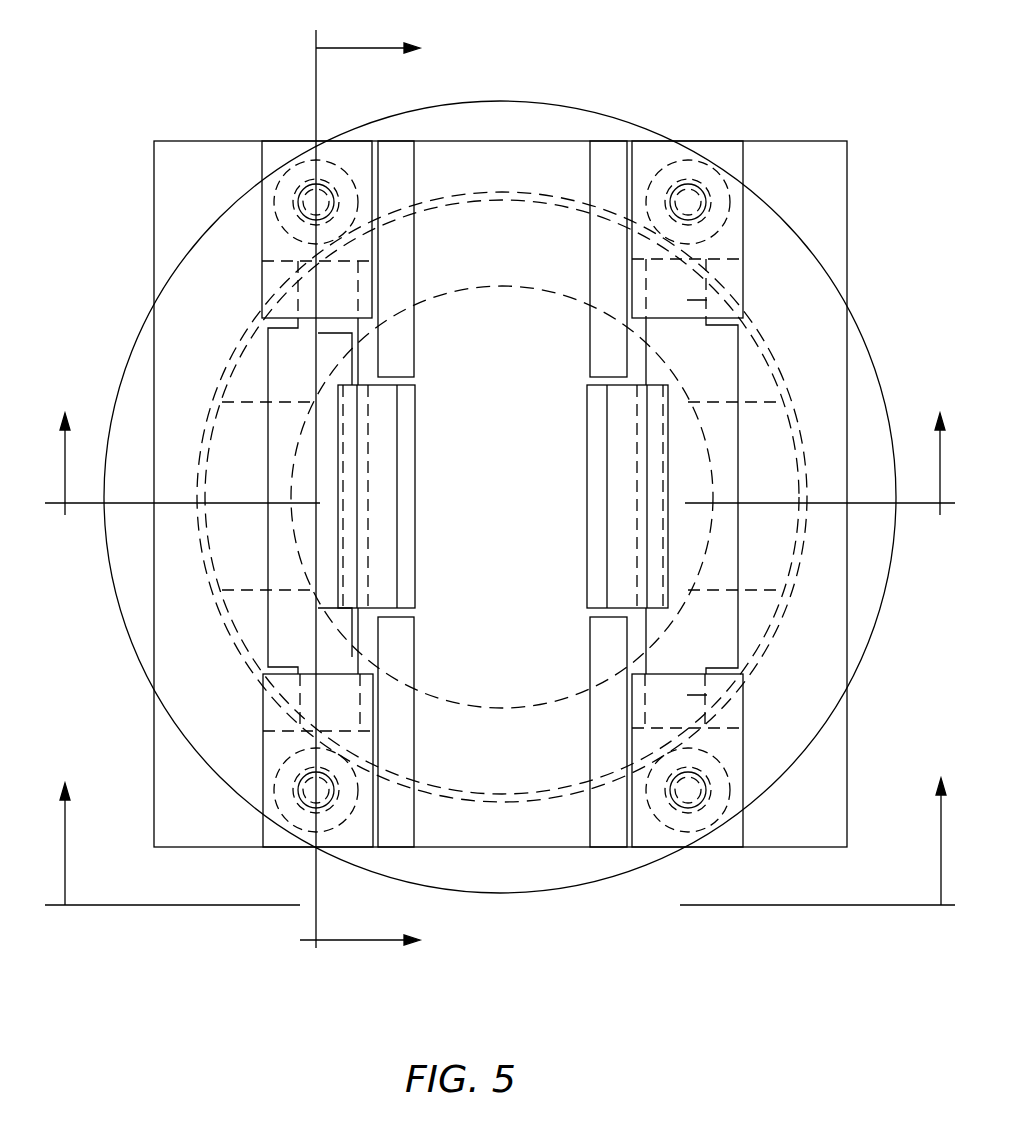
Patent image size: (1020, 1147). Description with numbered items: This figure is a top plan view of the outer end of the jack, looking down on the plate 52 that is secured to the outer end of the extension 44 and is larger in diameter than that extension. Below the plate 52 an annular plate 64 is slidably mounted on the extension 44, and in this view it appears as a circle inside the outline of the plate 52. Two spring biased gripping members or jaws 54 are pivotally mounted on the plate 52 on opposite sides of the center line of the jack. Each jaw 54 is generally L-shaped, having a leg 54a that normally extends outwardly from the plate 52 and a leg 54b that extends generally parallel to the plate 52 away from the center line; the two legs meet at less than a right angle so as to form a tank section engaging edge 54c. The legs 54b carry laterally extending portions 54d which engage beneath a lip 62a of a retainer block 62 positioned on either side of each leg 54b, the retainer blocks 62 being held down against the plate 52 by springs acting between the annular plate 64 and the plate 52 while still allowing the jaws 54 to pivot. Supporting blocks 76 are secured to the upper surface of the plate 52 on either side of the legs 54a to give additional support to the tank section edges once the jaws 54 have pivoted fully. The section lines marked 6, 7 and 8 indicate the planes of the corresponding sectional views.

The plate 52 is at (830, 175).
The annular plate 64 is at (866, 372).
The extension 44 is at (527, 290).
The retainer block 62 is at (273, 152).
The lip 62a is at (262, 283).
The supporting block 76 is at (598, 236).
The gripping member or jaw 54 is at (492, 525).
The leg 54a is at (622, 508).
The leg 54b is at (268, 380).
The tank section engaging edge 54c is at (605, 452).
The laterally extending portion 54d is at (262, 303).
The section line 6- 6 is at (352, 494).
The section line 7- 7 is at (499, 473).
The section line 8- 8 is at (501, 858).